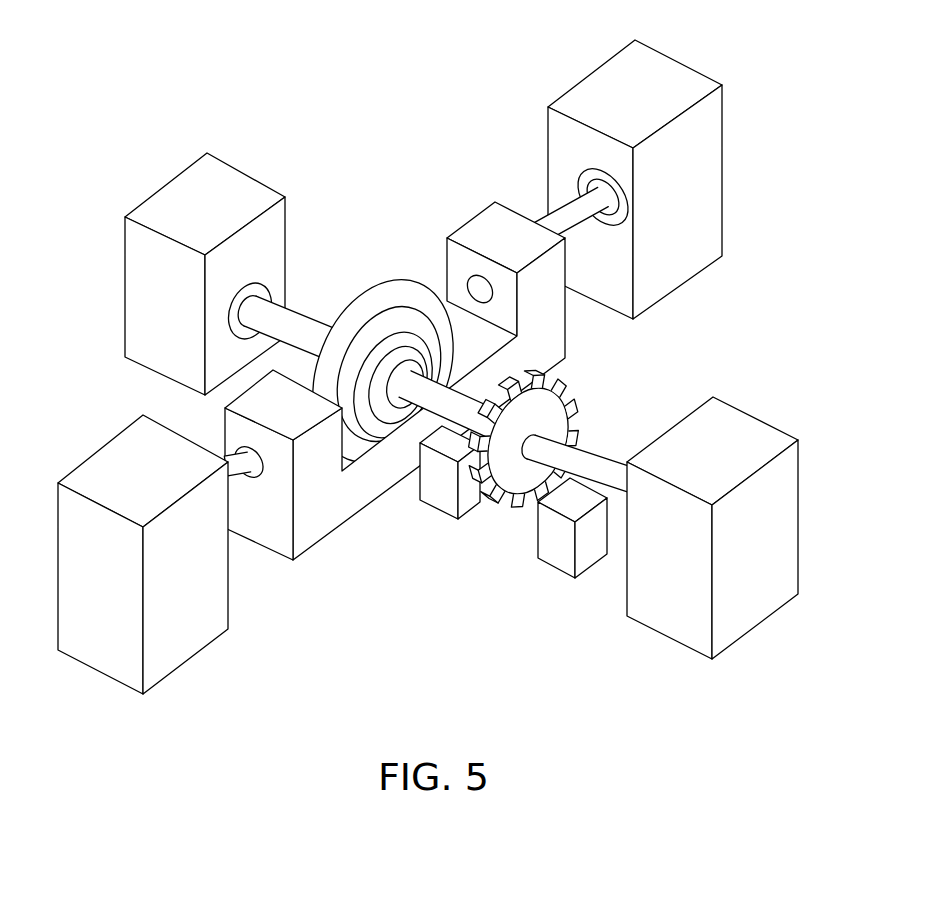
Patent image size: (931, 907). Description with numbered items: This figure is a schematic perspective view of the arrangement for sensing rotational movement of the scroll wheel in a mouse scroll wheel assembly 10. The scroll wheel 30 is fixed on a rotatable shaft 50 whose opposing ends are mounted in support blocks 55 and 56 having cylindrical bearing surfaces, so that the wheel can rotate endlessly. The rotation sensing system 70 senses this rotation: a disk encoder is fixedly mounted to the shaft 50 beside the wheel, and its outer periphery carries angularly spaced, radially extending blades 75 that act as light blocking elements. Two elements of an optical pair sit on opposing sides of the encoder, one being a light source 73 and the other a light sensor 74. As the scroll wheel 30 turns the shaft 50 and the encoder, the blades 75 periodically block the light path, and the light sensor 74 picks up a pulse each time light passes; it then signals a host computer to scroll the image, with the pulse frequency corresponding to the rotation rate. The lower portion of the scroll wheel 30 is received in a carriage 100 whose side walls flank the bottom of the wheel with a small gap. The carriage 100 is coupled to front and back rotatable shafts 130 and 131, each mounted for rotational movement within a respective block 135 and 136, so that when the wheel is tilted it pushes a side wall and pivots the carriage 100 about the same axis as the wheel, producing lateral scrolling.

The scroll wheel assembly 10 is at (428, 359).
The scroll wheel 30 is at (385, 297).
The rotatable shaft 50 is at (293, 318).
The support block 55 is at (232, 177).
The support block 56 is at (748, 425).
The rotation sensing system 70 is at (575, 471).
The light source 73 is at (442, 494).
The light sensor 74 is at (565, 561).
The blades 75 is at (583, 407).
The carriage 100 is at (394, 375).
The rotatable shaft 130 is at (578, 232).
The rotatable shaft 131 is at (252, 478).
The block 135 is at (680, 262).
The block 136 is at (192, 638).